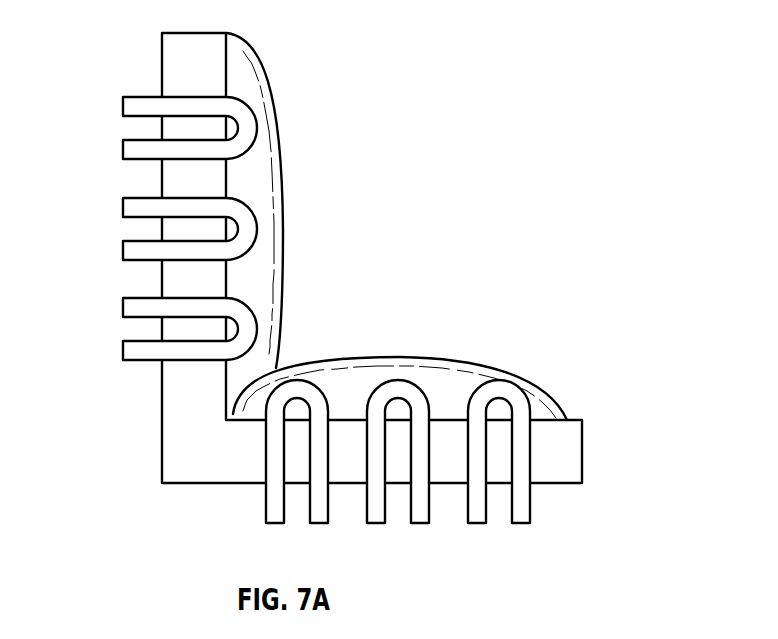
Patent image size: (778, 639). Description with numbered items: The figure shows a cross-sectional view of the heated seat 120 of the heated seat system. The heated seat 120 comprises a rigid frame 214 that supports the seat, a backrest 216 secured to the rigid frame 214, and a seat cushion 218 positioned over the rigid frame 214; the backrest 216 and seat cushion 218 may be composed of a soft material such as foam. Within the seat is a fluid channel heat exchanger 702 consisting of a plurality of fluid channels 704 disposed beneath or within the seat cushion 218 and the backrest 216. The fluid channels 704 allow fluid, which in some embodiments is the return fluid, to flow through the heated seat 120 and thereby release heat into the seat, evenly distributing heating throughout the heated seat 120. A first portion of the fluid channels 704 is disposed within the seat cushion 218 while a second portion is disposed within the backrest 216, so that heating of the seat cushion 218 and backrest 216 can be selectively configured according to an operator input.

The fluid channel heat exchanger 702 is at (342, 267).
The heated seat 120 is at (332, 258).
The rigid frame 214 is at (162, 400).
The backrest 216 is at (265, 65).
The seat cushion 218 is at (453, 360).
The fluid channels 704 is at (249, 106).